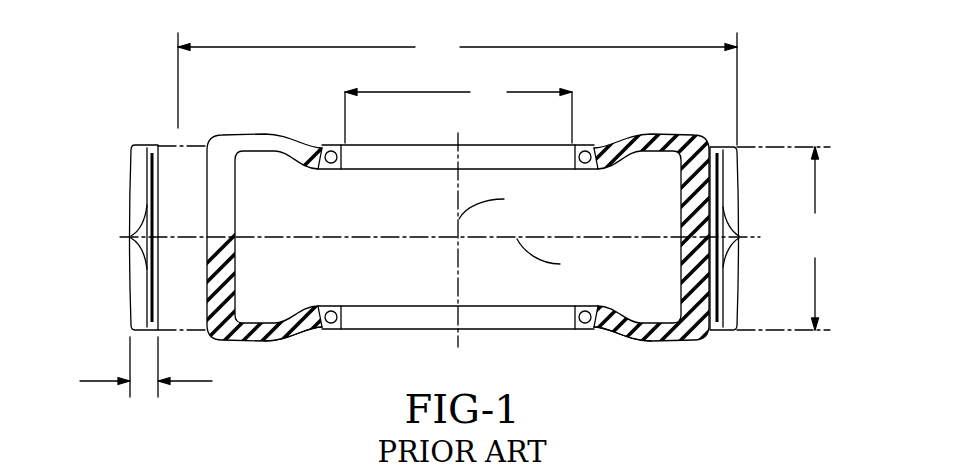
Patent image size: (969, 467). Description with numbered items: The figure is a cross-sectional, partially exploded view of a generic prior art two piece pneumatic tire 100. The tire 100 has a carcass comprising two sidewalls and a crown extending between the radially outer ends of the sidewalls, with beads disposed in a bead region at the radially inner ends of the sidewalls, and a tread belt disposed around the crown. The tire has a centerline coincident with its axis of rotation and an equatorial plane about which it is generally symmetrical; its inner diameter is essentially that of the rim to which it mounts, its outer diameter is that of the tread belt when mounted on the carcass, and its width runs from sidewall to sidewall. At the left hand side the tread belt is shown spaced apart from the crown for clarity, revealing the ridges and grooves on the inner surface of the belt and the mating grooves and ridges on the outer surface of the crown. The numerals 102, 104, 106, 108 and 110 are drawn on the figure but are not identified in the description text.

The two piece pneumatic tire 100 is at (139, 113).
The housing body 102 is at (691, 351).
The arm portion of housing 104 is at (280, 342).
The inner cavity wall 106 is at (236, 206).
The sealing ring 108 is at (334, 326).
The end cap 110 is at (130, 208).